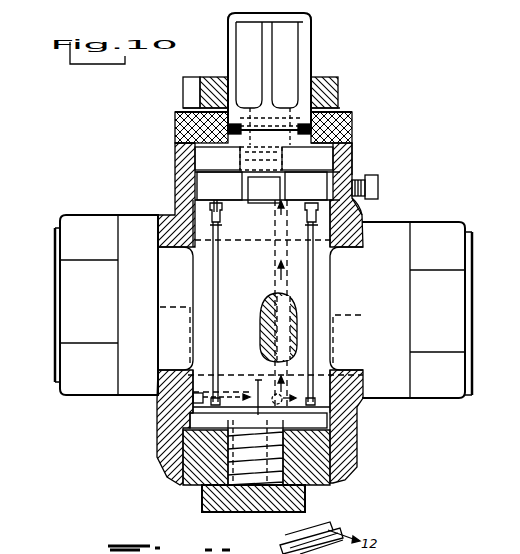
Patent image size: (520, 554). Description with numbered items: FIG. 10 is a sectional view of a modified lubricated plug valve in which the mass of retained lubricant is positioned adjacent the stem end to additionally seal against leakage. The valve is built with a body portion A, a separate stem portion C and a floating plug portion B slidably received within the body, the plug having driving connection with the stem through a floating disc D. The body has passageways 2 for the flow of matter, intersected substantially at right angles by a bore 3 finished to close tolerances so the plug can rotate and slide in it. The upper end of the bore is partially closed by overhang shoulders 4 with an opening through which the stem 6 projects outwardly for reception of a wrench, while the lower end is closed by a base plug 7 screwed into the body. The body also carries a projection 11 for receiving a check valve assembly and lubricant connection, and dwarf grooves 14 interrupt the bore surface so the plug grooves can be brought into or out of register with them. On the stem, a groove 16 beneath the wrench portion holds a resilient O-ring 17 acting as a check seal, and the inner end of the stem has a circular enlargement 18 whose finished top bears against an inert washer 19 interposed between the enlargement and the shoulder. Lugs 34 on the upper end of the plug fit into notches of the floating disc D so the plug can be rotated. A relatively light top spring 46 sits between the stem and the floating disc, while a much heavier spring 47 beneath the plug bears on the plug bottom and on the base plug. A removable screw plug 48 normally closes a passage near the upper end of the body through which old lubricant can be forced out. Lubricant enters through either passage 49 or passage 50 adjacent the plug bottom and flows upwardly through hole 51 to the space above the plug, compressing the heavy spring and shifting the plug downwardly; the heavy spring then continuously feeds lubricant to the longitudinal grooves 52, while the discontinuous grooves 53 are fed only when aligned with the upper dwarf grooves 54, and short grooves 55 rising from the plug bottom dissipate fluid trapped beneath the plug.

The passageways 2 is at (260, 308).
The bore 3 is at (345, 156).
The overhang shoulders 4 is at (225, 140).
The stem 6 is at (280, 79).
The base plug 7 is at (203, 494).
The projection 11 is at (52, 305).
The dwarf grooves 14 is at (222, 226).
The groove 16 is at (327, 120).
The O-ring 17 is at (228, 115).
The circular enlargement 18 is at (217, 158).
The washer 19 is at (235, 141).
The lugs 34 is at (267, 187).
The top spring 46 is at (307, 158).
The heavy spring 47 is at (258, 420).
The screw plug 48 is at (372, 180).
The passage 49 is at (288, 390).
The passage 50 is at (242, 392).
The hole 51 is at (275, 271).
The longitudinal grooves 52 is at (313, 281).
The longitudinal grooves 53 is at (215, 268).
The upper dwarf grooves 54 is at (220, 208).
The short grooves 55 is at (258, 380).
The body portion A is at (358, 214).
The floating plug portion B is at (275, 316).
The stem portion C is at (247, 68).
The floating disc D is at (306, 186).